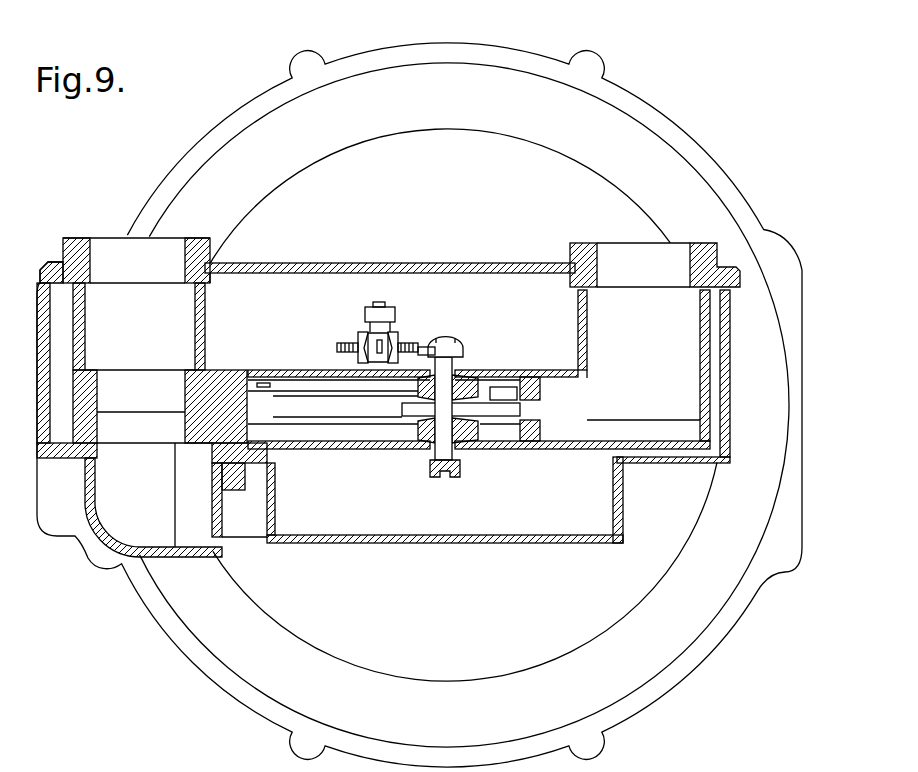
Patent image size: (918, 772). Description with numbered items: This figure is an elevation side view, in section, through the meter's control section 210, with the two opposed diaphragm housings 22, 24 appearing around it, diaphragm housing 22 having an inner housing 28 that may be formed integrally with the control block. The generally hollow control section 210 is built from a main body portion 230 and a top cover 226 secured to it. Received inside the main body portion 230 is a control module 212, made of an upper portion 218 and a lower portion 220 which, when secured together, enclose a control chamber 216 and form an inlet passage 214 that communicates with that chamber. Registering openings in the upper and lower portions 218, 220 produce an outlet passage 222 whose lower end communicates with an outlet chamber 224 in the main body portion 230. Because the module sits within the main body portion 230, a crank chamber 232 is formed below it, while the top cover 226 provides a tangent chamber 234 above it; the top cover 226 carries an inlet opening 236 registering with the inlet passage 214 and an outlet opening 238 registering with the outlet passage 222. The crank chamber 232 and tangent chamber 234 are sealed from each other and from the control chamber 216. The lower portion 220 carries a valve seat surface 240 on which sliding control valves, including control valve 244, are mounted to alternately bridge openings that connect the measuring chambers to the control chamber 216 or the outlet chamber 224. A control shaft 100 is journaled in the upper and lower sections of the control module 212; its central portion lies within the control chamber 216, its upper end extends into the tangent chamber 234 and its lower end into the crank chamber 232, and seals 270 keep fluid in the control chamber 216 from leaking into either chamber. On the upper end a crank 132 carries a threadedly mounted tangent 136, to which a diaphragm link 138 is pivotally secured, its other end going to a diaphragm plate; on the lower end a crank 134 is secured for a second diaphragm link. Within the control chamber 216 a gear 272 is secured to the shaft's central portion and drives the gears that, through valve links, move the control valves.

The diaphragm housing 22 is at (117, 771).
The diaphragm housing 24 is at (745, 771).
The inner housing 28 is at (677, 173).
The control shaft 100 is at (447, 368).
The crank 132 is at (422, 350).
The crank 134 is at (420, 477).
The tangent 136 is at (352, 330).
The diaphragm link 138 is at (390, 318).
The control section 210 is at (410, 262).
The control module 212 is at (273, 363).
The inlet passage 214 is at (590, 341).
The control chamber 216 is at (350, 427).
The upper portion 218 is at (297, 373).
The lower portion 220 is at (318, 443).
The outlet passage 222 is at (97, 388).
The outlet chamber 224 is at (160, 487).
The top cover 226 is at (460, 263).
The main body portion 230 is at (455, 545).
The crank chamber 232 is at (540, 520).
The tangent chamber 234 is at (551, 309).
The inlet opening 236 is at (597, 258).
The outlet opening 238 is at (177, 240).
The valve seat surface 240 is at (182, 410).
The control valve 244 is at (225, 378).
The seals 270 is at (472, 383).
The gear 272 is at (400, 408).